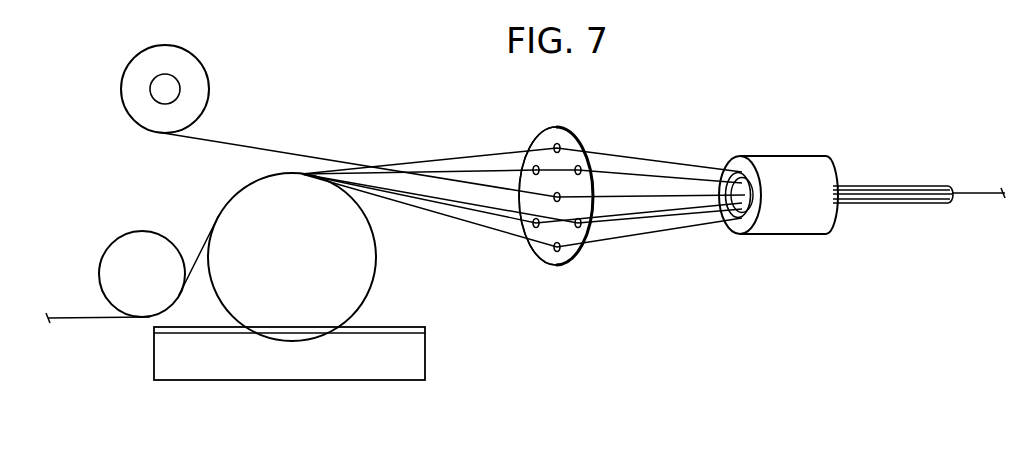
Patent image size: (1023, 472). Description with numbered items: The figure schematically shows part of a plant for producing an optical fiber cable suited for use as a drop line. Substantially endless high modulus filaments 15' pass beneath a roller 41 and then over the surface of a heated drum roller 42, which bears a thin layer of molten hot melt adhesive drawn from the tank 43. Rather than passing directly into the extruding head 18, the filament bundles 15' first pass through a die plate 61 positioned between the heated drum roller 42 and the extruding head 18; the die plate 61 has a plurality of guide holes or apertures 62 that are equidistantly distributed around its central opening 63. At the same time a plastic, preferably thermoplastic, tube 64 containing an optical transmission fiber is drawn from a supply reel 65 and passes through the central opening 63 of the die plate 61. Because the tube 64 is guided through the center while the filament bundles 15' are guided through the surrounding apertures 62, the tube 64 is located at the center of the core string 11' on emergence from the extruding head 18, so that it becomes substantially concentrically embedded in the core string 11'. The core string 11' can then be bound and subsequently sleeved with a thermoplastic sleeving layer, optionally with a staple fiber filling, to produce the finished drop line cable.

The supply reel 65 is at (197, 80).
The tube 64 is at (258, 147).
The roller 41 is at (107, 272).
The heated drum roller 42 is at (362, 263).
The tank 43 is at (368, 367).
The endless filaments 15' is at (407, 242).
The die plate 61 is at (557, 132).
The apertures 62 is at (557, 252).
The central opening 63 is at (585, 237).
The extruding head 18 is at (797, 220).
The core string 11' is at (893, 215).